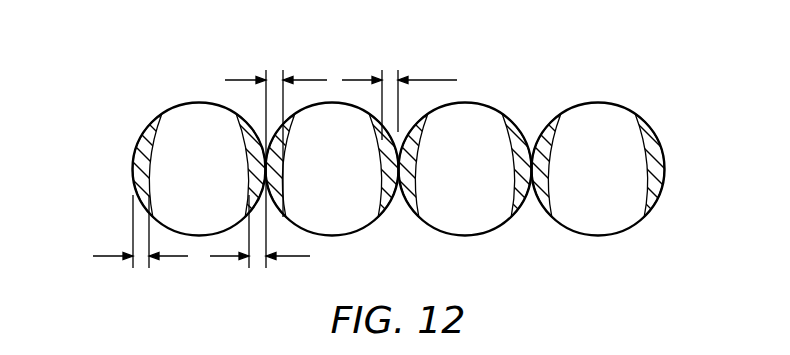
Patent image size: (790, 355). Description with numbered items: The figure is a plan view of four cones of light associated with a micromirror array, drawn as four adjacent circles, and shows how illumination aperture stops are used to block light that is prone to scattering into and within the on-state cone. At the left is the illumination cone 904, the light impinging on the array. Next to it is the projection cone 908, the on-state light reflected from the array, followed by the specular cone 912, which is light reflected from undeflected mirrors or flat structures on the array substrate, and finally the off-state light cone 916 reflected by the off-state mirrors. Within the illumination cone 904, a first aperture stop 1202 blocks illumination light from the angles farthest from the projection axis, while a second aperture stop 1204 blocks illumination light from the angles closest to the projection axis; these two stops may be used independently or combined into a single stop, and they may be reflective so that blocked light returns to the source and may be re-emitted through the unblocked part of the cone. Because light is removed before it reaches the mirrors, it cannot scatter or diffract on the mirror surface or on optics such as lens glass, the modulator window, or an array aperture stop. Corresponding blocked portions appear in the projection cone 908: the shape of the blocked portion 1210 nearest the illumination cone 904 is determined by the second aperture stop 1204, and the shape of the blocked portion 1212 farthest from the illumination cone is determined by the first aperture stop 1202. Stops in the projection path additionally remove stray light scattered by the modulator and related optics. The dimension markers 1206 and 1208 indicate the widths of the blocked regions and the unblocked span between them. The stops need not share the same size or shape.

The illumination cone 904 is at (200, 101).
The projection cone 908 is at (332, 237).
The specular cone 912 is at (464, 237).
The off-state light cone 916 is at (596, 101).
The first aperture stop 1202 is at (140, 157).
The second aperture stop 1204 is at (253, 170).
The abrasion depth 1206 is at (107, 257).
The distance between abraded regions 1208 is at (221, 257).
The blocked portion of the projection cone nearest the illumination cone 1210 is at (282, 160).
The blocked portion of the projection cone farthest from the illumination cone 1212 is at (387, 172).